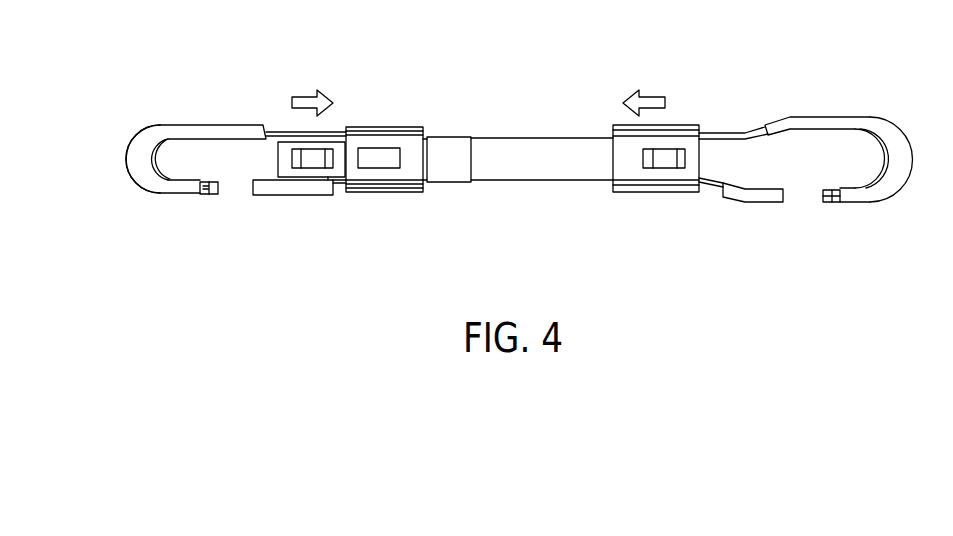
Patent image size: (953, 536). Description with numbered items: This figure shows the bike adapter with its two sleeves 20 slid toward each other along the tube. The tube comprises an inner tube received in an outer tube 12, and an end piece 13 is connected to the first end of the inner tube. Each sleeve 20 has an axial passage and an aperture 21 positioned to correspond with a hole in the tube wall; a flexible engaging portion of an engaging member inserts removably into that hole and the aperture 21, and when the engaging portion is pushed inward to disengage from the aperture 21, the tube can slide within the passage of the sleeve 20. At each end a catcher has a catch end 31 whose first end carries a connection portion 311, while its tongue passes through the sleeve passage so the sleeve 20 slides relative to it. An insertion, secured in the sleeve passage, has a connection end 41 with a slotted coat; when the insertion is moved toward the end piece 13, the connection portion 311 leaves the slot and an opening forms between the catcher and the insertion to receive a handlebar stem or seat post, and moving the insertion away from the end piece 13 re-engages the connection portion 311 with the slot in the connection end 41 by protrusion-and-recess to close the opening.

The outer tube 12 is at (531, 148).
The end piece 13 is at (447, 147).
The sleeve 20 is at (382, 132).
The aperture 21 is at (378, 162).
The catch end 31 is at (132, 182).
The connection portion 311 is at (207, 188).
The connection end 41 is at (703, 183).